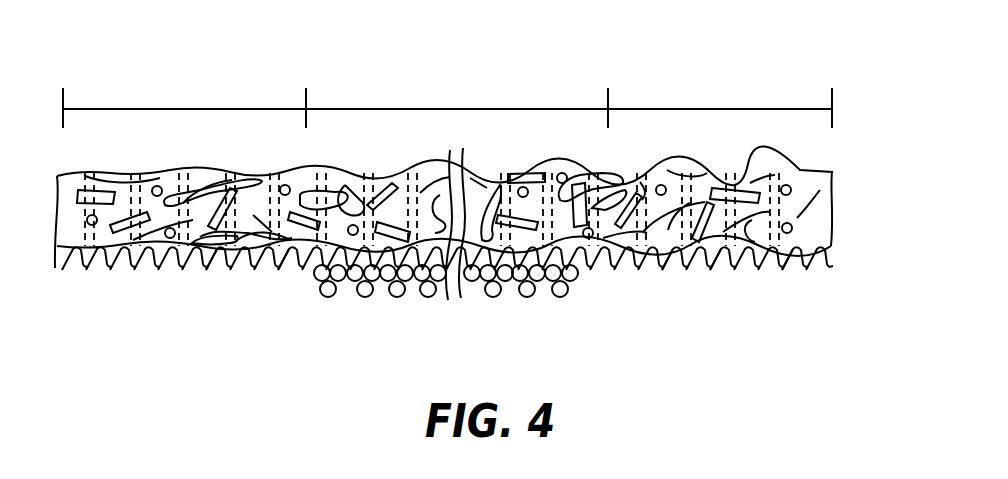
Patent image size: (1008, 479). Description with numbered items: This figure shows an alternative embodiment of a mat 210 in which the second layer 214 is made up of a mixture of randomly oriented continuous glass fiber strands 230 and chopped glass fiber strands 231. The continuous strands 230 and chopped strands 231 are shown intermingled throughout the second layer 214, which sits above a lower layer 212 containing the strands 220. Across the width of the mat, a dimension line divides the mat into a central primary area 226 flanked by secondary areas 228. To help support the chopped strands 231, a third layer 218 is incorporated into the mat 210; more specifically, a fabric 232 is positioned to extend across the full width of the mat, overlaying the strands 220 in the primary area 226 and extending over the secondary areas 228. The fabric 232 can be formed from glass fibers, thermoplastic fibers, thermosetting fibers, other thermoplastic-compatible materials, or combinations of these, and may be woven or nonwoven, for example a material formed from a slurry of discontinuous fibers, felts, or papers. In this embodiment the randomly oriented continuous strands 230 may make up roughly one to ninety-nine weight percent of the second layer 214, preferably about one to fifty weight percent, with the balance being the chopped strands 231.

The mat 210 is at (487, 272).
The first layer 212 is at (487, 300).
The second layer 214 is at (847, 168).
The third layer 218 is at (128, 268).
The strands 220 is at (328, 297).
The primary areas 226 is at (448, 108).
The secondary areas 228 is at (702, 108).
The continuous glass fiber strands 230 is at (283, 262).
The chopped glass fiber strands 231 is at (787, 265).
The fabric 232 is at (662, 268).